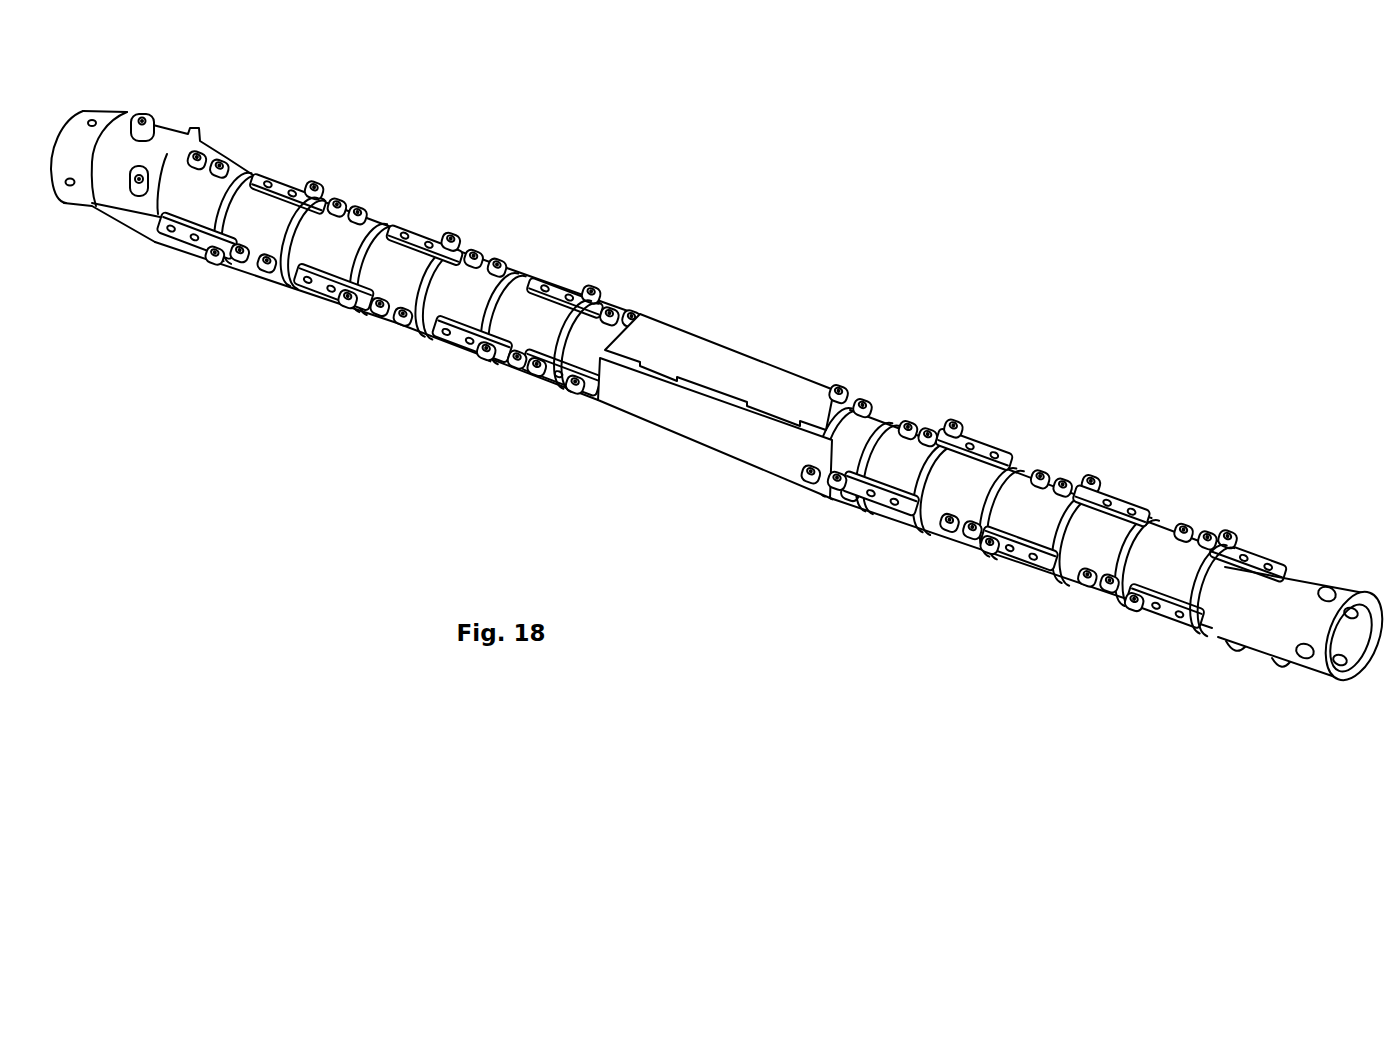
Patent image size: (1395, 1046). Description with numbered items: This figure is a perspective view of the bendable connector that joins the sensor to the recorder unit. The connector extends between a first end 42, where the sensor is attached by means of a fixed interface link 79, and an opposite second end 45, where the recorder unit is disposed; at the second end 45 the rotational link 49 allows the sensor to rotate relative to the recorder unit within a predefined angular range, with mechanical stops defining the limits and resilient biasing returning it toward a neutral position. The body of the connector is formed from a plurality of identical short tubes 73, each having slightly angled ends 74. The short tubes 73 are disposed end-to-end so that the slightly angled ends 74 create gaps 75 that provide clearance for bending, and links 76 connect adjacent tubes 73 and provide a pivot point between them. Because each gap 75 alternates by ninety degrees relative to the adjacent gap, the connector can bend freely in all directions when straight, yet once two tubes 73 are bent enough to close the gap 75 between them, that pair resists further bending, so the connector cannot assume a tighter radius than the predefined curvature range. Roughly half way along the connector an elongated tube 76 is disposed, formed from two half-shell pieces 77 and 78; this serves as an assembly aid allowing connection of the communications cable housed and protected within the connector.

The first end 42 is at (1307, 585).
The second end 45 is at (74, 206).
The rotational link 49 is at (103, 122).
The short tubes 73 is at (407, 275).
The slightly angled ends 74 is at (297, 250).
The gaps 75 is at (1012, 477).
The links 76 is at (753, 334).
The half-shell piece 77 is at (790, 384).
The half-shell piece 78 is at (694, 438).
The fixed interface link 79 is at (1288, 642).